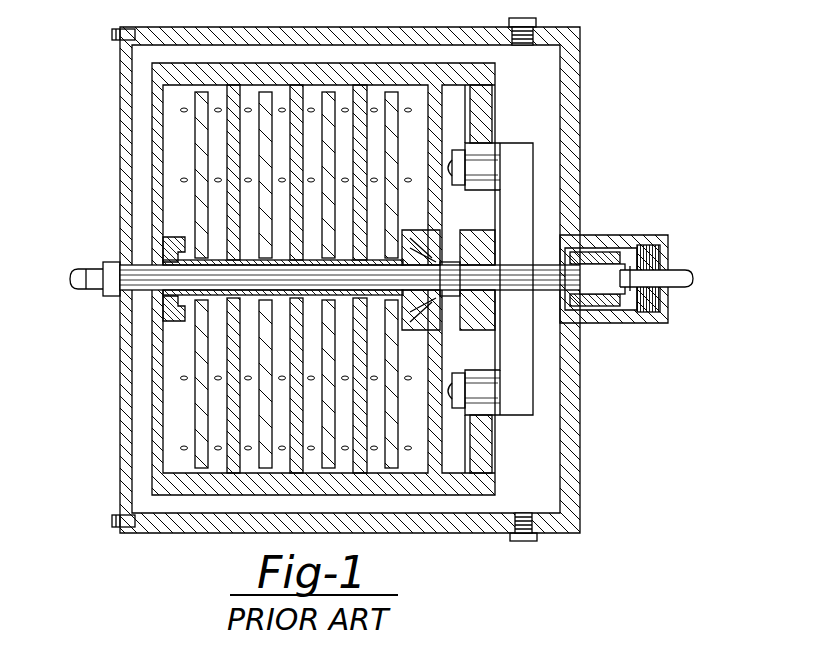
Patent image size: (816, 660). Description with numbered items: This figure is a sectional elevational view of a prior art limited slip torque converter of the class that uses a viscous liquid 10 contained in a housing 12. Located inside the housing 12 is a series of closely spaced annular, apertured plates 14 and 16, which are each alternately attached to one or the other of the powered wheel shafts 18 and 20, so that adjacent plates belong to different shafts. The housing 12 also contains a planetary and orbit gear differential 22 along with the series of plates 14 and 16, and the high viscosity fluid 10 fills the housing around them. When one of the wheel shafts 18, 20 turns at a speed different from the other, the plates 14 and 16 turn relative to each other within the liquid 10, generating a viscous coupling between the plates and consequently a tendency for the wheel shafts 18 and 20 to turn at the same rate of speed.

The viscous liquid 10 is at (548, 95).
The housing 12 is at (583, 160).
The annular apertured plate 14 is at (203, 133).
The annular apertured plate 16 is at (236, 172).
The powered wheel shaft 18 is at (86, 268).
The powered wheel shaft 20 is at (680, 270).
The planetary and orbit gear differential 22 is at (545, 214).